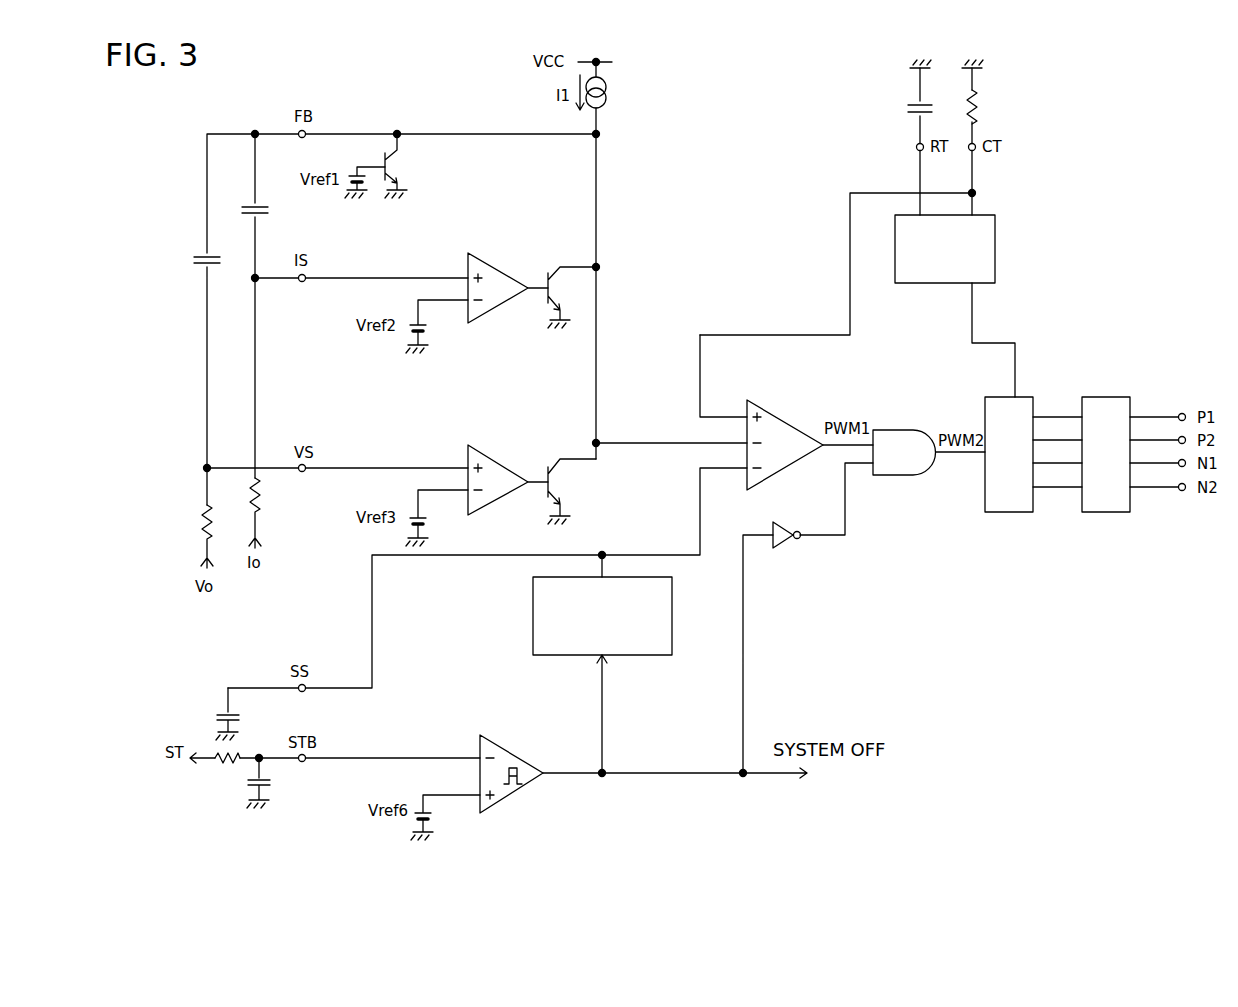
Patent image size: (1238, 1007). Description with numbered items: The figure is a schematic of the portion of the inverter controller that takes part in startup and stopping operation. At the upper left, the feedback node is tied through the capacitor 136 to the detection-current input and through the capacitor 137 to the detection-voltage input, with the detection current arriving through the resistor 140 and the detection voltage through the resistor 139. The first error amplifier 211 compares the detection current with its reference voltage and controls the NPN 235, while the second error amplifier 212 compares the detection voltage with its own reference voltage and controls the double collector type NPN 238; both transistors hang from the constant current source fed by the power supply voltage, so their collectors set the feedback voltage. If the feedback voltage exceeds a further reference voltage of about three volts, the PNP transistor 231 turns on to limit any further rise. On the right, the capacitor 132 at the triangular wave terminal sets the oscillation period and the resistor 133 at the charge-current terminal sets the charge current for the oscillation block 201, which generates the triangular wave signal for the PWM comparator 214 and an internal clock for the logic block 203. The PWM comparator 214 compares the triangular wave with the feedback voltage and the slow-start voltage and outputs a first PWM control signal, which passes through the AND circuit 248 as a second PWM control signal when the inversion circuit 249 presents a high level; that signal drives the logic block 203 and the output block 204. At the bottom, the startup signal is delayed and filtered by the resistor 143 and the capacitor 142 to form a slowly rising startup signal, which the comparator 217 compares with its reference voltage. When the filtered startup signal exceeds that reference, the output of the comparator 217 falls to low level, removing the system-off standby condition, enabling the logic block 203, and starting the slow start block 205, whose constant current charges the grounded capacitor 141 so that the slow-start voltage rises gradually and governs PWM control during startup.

The capacitor 132 is at (994, 107).
The resistor 133 is at (906, 108).
The capacitor 136 is at (266, 201).
The capacitor 137 is at (217, 246).
The resistor 139 is at (223, 536).
The resistor 140 is at (275, 513).
The capacitor 141 is at (213, 714).
The capacitor 142 is at (274, 783).
The resistor 143 is at (227, 770).
The oscillation block 201 is at (1010, 248).
The logic block 203 is at (1010, 520).
The output block 204 is at (1107, 520).
The slow start block 205 is at (520, 614).
The first error amplifier 211 is at (500, 308).
The second error amplifier 212 is at (500, 500).
The PWM comparator 214 is at (772, 405).
The comparator 217 is at (514, 808).
The PNP transistor 231 is at (408, 166).
The NPN 235 is at (572, 297).
The double collector type NPN 238 is at (572, 491).
The AND circuit 248 is at (897, 426).
The inversion circuit 249 is at (782, 554).